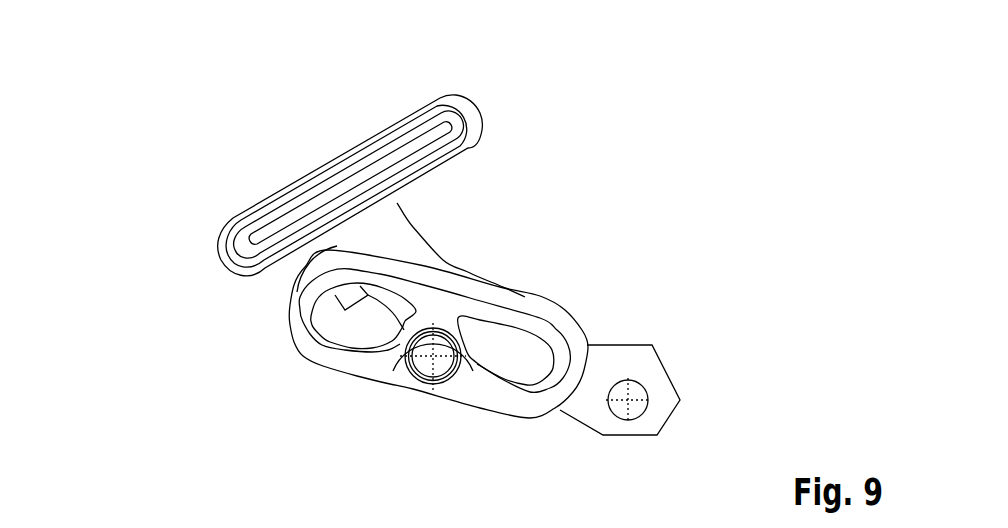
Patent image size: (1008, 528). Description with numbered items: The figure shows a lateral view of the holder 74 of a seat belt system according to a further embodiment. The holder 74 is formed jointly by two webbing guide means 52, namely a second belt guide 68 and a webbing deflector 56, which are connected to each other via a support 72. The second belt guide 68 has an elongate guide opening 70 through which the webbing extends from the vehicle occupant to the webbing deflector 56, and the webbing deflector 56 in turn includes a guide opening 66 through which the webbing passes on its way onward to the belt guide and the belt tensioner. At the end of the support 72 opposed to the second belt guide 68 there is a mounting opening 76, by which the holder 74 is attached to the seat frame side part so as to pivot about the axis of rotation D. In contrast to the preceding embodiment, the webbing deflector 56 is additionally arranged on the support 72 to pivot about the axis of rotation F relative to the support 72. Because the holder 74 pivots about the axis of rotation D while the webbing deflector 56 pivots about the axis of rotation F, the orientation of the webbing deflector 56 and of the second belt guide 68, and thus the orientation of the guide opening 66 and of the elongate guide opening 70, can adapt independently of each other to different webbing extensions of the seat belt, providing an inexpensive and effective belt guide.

The webbing guide means 52 is at (448, 268).
The webbing deflector 56 is at (307, 342).
The guide opening 66 is at (503, 343).
The second belt guide 68 is at (392, 140).
The elongate guide opening 70 is at (298, 220).
The support 72 is at (608, 364).
The holder 74 is at (157, 206).
The mounting opening 76 is at (636, 390).
The axis of rotation F is at (431, 356).
The axis of rotation D is at (628, 400).